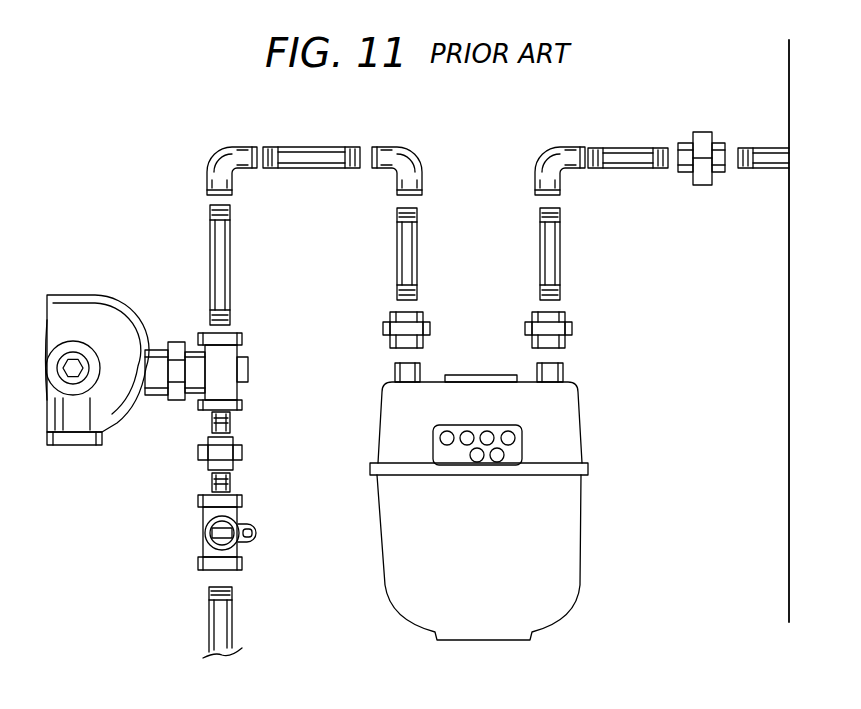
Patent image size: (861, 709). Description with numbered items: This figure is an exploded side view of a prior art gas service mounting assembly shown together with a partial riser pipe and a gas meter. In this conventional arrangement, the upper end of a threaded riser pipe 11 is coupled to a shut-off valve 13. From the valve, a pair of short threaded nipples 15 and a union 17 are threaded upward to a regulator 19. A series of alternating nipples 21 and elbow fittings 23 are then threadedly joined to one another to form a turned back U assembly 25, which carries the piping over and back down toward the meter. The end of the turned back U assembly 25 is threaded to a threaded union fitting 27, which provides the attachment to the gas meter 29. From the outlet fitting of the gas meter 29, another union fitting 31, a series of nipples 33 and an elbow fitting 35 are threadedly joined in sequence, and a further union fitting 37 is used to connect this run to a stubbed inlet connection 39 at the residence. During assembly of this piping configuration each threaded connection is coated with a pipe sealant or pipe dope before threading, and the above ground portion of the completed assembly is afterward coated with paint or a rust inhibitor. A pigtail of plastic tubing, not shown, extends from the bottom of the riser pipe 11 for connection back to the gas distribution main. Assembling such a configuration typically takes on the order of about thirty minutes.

The threaded riser pipe 11 is at (232, 621).
The shut-off valve 13 is at (201, 515).
The short threaded nipples 15 is at (230, 421).
The union 17 is at (242, 452).
The regulator 19 is at (105, 293).
The nipples 21 is at (315, 146).
The elbow fittings 23 is at (233, 146).
The turned back U assembly 25 is at (203, 197).
The threaded union fitting 27 is at (383, 328).
The gas meter 29 is at (580, 436).
The union fitting 31 is at (572, 329).
The nipples 33 is at (634, 148).
The elbow fitting 35 is at (553, 147).
The union fitting 37 is at (686, 174).
The stubbed inlet connection 39 is at (758, 170).